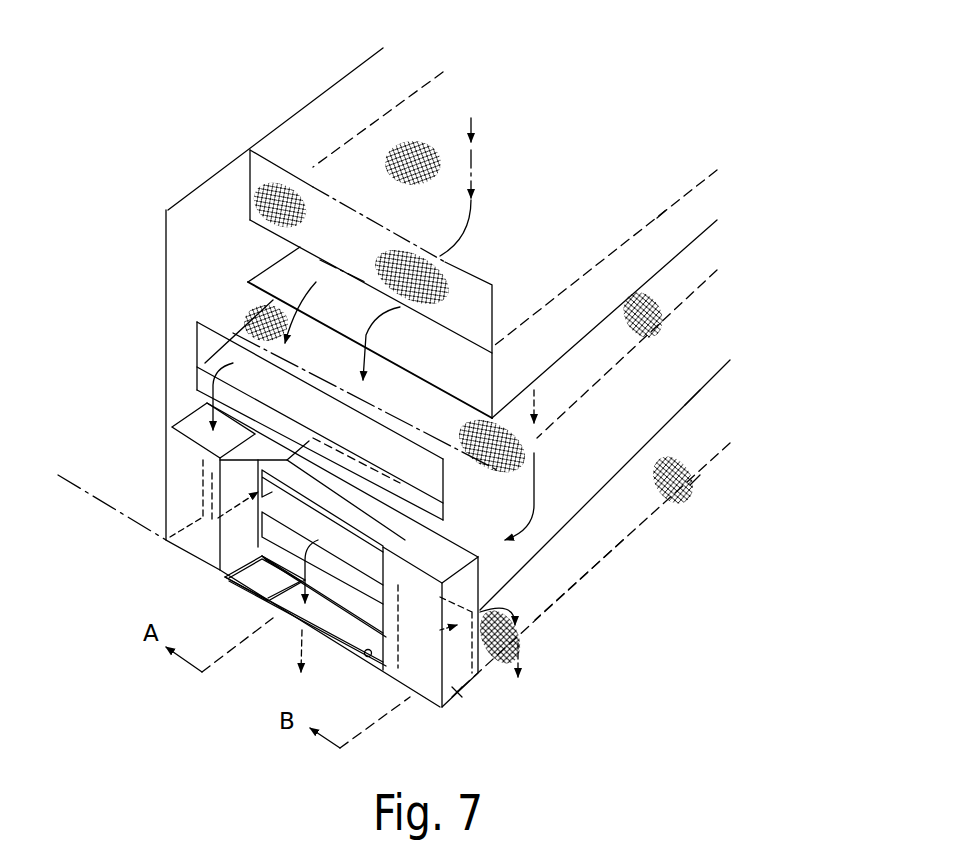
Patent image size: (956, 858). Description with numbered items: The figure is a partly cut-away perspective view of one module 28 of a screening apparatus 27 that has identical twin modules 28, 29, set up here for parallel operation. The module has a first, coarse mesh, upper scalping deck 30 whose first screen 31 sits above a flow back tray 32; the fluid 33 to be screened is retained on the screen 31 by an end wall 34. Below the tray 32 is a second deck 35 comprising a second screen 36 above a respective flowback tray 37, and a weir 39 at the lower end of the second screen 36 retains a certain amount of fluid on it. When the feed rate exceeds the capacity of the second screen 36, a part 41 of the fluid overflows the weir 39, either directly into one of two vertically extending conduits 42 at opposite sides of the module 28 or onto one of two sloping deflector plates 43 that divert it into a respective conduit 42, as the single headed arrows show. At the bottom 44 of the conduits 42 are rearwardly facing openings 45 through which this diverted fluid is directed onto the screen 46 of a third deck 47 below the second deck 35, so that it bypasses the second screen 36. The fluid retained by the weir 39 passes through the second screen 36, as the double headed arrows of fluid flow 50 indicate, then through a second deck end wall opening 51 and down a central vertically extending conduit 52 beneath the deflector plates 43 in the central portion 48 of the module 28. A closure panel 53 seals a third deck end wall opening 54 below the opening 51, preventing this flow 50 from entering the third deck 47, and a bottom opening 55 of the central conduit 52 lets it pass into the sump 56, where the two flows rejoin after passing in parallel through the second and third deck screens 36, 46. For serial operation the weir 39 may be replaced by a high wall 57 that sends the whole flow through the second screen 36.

The screening apparatus 27 is at (588, 588).
The module 28 is at (183, 556).
The module 29 is at (72, 500).
The first deck 30 is at (697, 207).
The first screen 31 is at (657, 220).
The flow back tray 32 is at (680, 250).
The fluid 33 is at (472, 178).
The end wall 34 is at (494, 295).
The second deck 35 is at (670, 402).
The second screen 36 is at (680, 303).
The flowback tray 37 is at (690, 379).
The weir 39 is at (197, 368).
The part of the fluid 41 is at (207, 400).
The vertically extending conduits 42 is at (193, 425).
The sloping deflector plates 43 is at (445, 505).
The bottom of the vertical conduits 44 is at (452, 690).
The rearwardly facing openings 45 is at (463, 693).
The third deck screen 46 is at (687, 458).
The third deck 47 is at (693, 500).
The central portion 48 is at (289, 630).
The fluid flow 50 is at (535, 528).
The second deck end wall opening 51 is at (260, 480).
The central vertically extending conduit 52 is at (347, 633).
The closure panel 53 is at (250, 580).
The third deck end wall opening 54 is at (252, 579).
The bottom opening 55 is at (368, 657).
The sump 56 is at (273, 670).
The high wall 57 is at (197, 333).